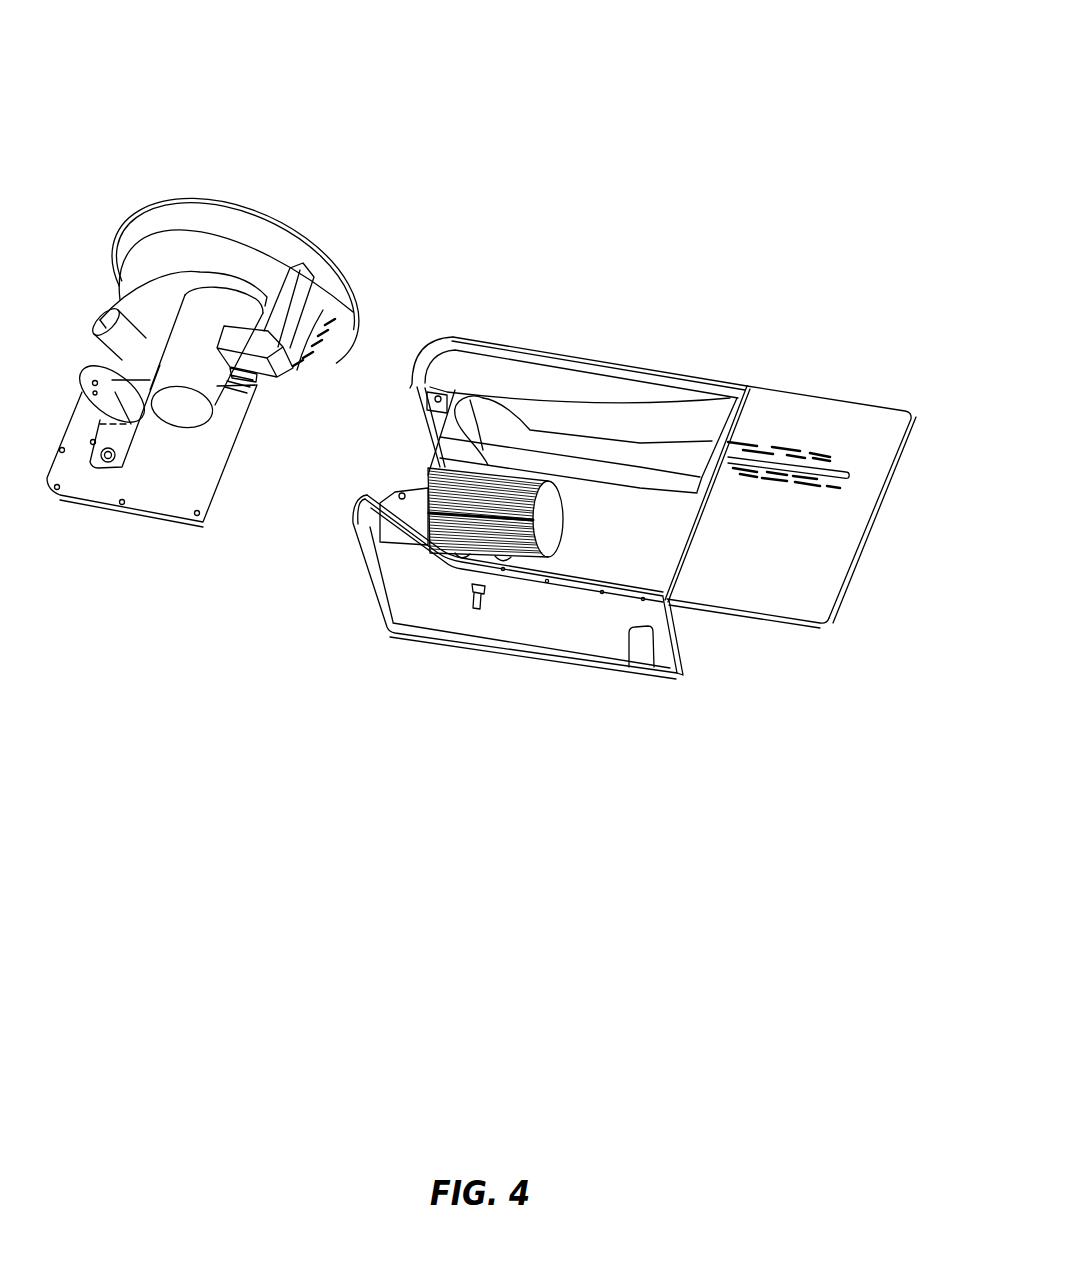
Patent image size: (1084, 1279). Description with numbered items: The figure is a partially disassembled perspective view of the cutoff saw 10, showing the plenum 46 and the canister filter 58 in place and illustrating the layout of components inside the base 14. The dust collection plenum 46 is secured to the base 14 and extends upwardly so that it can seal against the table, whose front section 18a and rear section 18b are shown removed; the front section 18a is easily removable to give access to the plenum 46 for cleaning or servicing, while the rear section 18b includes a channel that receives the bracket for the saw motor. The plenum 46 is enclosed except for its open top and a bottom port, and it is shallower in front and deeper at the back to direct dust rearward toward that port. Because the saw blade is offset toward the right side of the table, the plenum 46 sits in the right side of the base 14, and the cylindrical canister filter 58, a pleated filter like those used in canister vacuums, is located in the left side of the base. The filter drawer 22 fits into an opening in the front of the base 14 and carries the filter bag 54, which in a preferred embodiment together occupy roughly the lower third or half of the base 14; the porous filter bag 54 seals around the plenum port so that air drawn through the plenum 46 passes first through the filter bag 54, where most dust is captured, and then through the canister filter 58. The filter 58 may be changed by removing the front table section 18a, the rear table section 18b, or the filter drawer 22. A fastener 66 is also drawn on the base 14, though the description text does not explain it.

The apparatus assembly 10 is at (715, 152).
The housing 14 is at (590, 630).
The first cover plate 18a is at (775, 420).
The second cover with blower assembly 18b is at (176, 452).
The cover plate edge 22 is at (688, 620).
The channel baffle 46 is at (587, 418).
The slot 54 is at (643, 530).
The cylindrical roller 58 is at (492, 492).
The fastener 66 is at (470, 610).